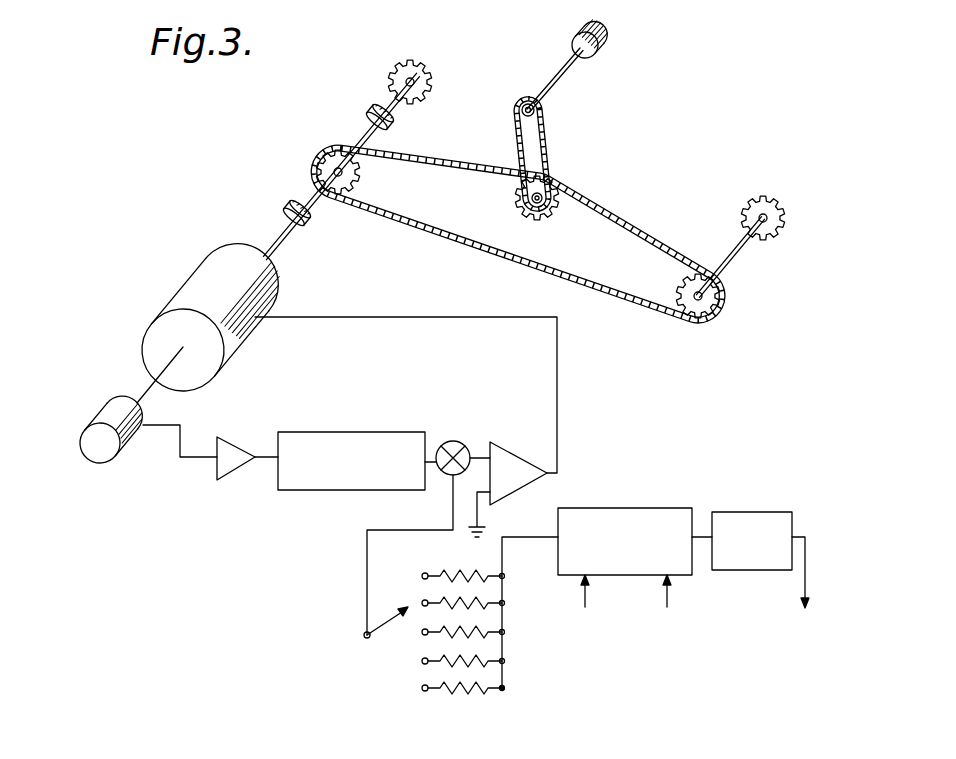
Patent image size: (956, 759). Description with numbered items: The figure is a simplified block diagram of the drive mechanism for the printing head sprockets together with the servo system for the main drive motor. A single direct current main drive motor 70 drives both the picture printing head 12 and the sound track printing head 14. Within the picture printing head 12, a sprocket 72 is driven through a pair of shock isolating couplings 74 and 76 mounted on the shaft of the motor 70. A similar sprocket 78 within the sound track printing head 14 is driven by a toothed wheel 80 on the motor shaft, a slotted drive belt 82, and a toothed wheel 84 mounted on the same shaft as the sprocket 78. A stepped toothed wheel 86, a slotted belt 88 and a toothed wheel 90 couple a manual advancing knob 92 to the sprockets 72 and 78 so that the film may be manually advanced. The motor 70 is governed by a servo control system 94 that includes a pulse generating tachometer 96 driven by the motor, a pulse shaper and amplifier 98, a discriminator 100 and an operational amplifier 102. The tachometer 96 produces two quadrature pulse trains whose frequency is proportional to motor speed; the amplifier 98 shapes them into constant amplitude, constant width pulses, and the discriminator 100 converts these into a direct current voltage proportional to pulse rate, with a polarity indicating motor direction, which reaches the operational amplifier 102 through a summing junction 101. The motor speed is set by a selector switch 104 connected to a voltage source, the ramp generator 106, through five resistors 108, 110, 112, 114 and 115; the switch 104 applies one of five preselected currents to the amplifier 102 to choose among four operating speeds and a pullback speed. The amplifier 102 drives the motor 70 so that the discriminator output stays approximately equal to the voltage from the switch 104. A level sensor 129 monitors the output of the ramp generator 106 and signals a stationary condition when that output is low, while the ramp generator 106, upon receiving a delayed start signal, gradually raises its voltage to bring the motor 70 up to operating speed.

The picture printing head 12 is at (403, 80).
The sound track printing head 14 is at (775, 191).
The main drive motor 70 is at (223, 272).
The sprocket 72 is at (438, 76).
The shock isolating coupling 74 is at (290, 198).
The shock isolating coupling 76 is at (370, 108).
The sprocket 78 is at (763, 193).
The toothed wheel 80 is at (362, 177).
The slotted drive belt 82 is at (620, 217).
The toothed wheel 84 is at (677, 287).
The stepped toothed wheel 86 is at (558, 212).
The slotted belt 88 is at (548, 147).
The toothed wheel 90 is at (520, 118).
The manual advancing knob 92 is at (600, 45).
The servo control system 94 is at (465, 525).
The pulse generating tachometer 96 is at (113, 410).
The pulse shaper and amplifier 98 is at (242, 440).
The discriminator 100 is at (367, 430).
The summing junction 101 is at (453, 441).
The operational amplifier 102 is at (505, 441).
The selector switch 104 is at (362, 635).
The ramp generator 106 is at (647, 508).
The resistor 108 is at (457, 570).
The resistor 110 is at (443, 600).
The resistor 112 is at (443, 640).
The resistor 114 is at (447, 663).
The resistor 115 is at (453, 690).
The level sensor 129 is at (757, 512).